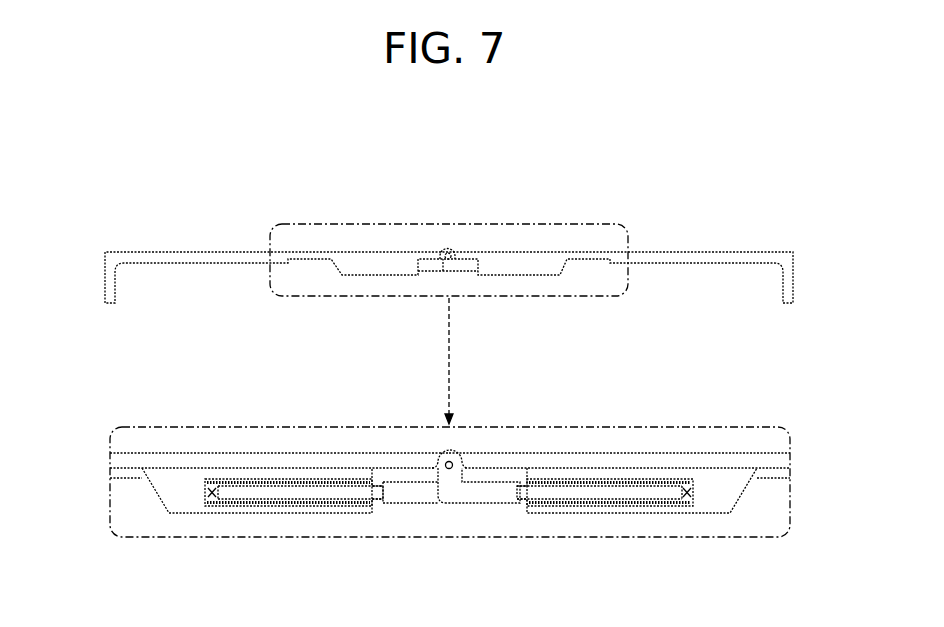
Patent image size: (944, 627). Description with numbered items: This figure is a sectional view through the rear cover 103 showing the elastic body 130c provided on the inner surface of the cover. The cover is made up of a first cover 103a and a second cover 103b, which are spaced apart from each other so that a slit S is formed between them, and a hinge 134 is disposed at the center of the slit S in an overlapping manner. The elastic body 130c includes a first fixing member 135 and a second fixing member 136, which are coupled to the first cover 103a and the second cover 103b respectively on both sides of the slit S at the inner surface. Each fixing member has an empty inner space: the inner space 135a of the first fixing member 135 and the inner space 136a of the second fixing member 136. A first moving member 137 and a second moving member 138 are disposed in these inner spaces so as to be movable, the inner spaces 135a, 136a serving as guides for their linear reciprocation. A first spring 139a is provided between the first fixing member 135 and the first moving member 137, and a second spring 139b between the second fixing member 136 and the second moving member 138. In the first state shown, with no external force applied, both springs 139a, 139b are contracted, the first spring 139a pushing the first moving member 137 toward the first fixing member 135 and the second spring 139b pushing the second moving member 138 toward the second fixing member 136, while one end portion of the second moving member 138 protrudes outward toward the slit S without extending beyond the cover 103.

The rear cover 103 is at (179, 258).
The elastic body 130c is at (427, 250).
The first cover 103a is at (178, 460).
The second cover 103b is at (686, 460).
The slit S is at (439, 456).
The hinge 134 is at (462, 458).
The first fixing member 135 is at (178, 514).
The inner space of first fixing member 135a is at (212, 499).
The first spring 139a is at (300, 507).
The first moving member 137 is at (406, 505).
The second moving member 138 is at (468, 505).
The second spring 139b is at (604, 507).
The inner space of second fixing member 136a is at (686, 499).
The second fixing member 136 is at (722, 514).